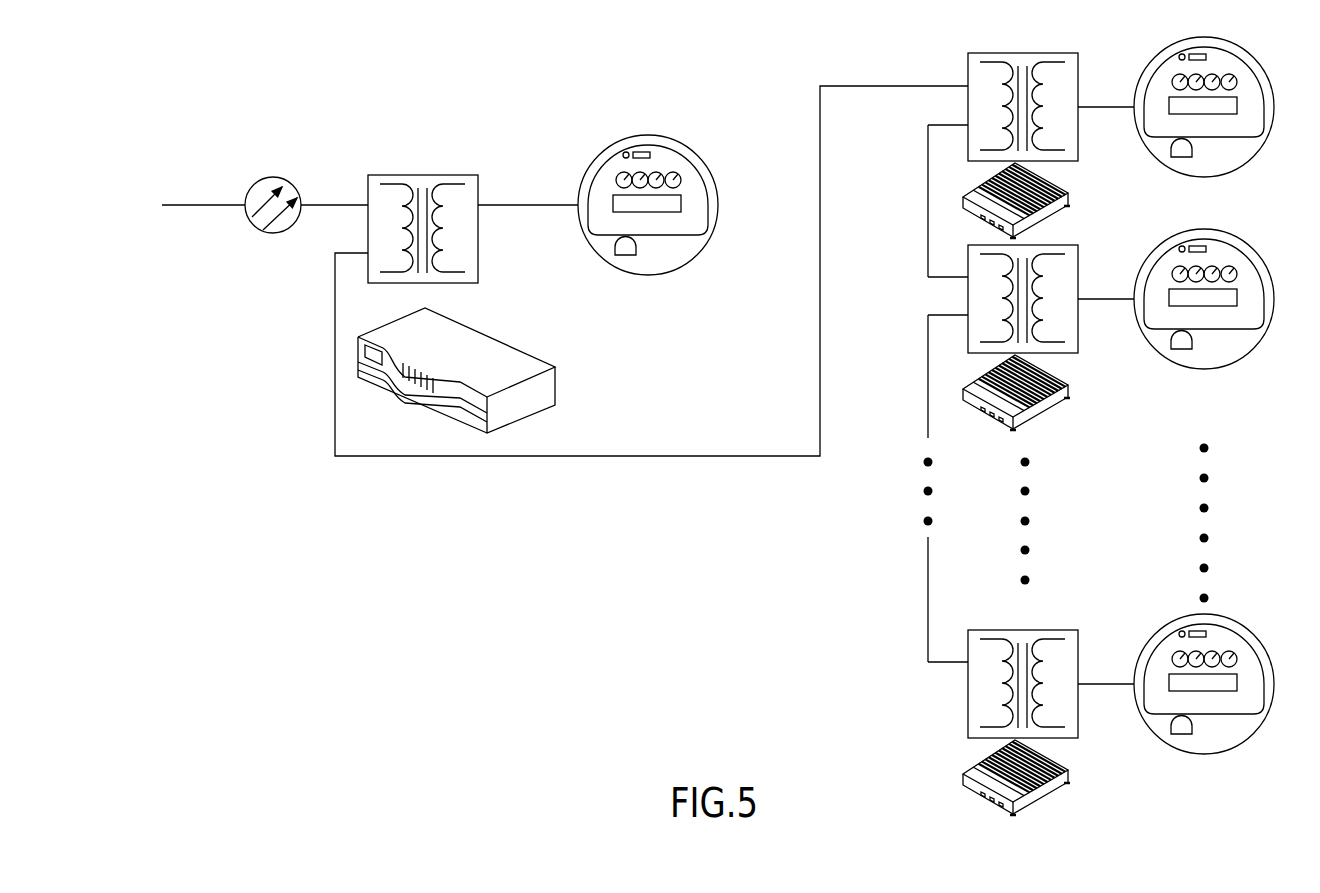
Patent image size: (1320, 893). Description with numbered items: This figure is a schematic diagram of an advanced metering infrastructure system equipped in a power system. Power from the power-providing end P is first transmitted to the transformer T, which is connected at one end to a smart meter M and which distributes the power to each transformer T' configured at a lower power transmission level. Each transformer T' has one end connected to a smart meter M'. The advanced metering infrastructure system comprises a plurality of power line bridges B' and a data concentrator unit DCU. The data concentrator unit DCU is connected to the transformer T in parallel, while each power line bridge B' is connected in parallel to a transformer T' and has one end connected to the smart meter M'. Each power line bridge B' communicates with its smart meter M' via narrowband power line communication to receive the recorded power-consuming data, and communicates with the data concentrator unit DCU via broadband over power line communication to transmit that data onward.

The power-providing end P is at (273, 233).
The transformer T is at (423, 211).
The smart meter M is at (648, 222).
The data concentrator unit DCU is at (478, 332).
The transformer T' is at (1038, 393).
The power line bridge B' is at (1036, 489).
The smart meter M' is at (1204, 411).